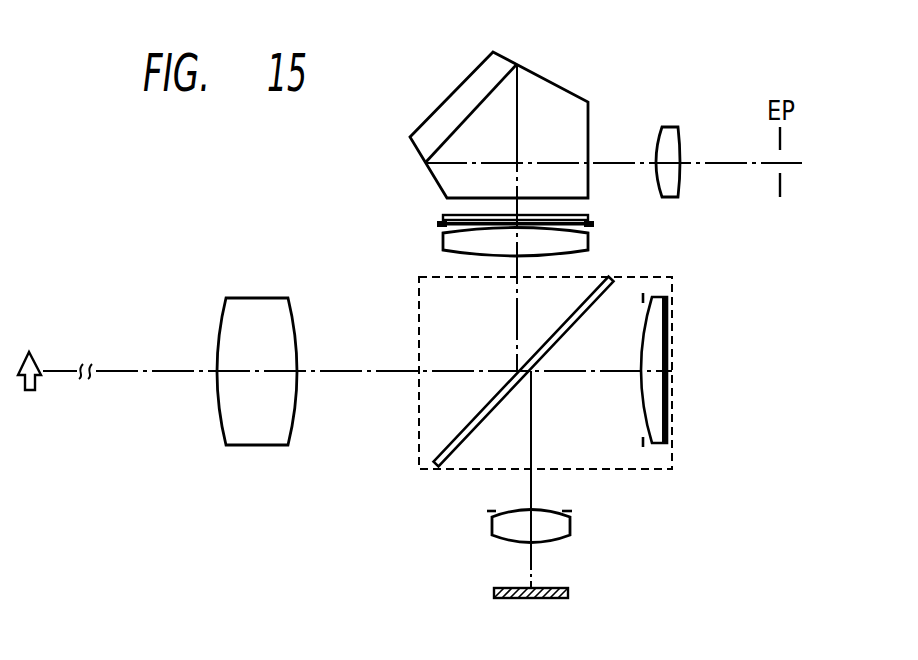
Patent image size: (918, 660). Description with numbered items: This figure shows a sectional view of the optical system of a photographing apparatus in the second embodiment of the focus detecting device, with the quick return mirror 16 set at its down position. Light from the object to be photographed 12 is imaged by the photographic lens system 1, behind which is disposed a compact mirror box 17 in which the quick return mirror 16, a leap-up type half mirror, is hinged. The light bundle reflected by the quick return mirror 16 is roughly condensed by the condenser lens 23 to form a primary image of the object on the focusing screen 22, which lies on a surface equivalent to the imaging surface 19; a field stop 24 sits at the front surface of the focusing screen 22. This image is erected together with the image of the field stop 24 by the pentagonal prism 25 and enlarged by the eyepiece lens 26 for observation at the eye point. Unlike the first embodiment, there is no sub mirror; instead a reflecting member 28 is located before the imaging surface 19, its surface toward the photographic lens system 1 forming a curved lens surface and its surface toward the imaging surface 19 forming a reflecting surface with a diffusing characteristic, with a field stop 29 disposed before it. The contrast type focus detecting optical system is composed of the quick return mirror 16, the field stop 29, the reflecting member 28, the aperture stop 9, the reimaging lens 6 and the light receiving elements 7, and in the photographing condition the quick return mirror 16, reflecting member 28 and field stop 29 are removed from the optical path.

The photographic lens system 1 is at (250, 297).
The reimaging lens 6 is at (571, 528).
The light receiving element 7 is at (570, 590).
The aperture stop 9 is at (566, 511).
The object to be photographed 12 is at (36, 356).
The quick return mirror 16 is at (590, 305).
The mirror box 17 is at (418, 330).
The imaging surface 19 is at (673, 343).
The focusing screen 22 is at (443, 216).
The condenser lens 23 is at (443, 243).
The field stop 24 is at (590, 225).
The pentagonal prism 25 is at (565, 91).
The eyepiece lens 26 is at (672, 122).
The reflecting member 28 is at (665, 446).
The field stop 29 is at (643, 441).